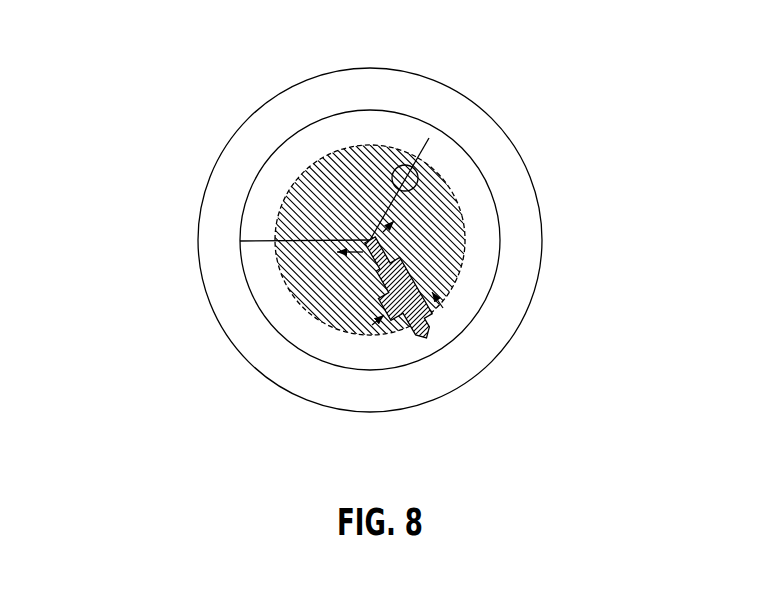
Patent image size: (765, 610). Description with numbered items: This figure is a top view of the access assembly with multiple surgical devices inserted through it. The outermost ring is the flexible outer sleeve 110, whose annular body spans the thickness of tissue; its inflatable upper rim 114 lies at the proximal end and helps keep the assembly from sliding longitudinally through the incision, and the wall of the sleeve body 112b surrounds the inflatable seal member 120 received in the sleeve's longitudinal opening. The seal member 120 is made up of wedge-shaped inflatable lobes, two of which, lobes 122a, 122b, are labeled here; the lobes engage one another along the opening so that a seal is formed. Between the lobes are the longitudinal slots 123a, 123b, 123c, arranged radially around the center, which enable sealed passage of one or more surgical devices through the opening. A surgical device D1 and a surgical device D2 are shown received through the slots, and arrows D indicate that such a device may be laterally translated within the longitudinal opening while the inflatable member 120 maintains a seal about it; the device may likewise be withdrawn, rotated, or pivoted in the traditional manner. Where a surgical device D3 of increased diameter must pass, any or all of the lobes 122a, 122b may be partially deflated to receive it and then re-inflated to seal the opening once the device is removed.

The flexible outer sleeve 110 is at (367, 226).
The inner housing wall 112b is at (265, 182).
The upper rim 114 is at (217, 213).
The inflatable seal member 120 is at (312, 143).
The inflatable lobe 122a is at (478, 240).
The inflatable lobe 122b is at (322, 345).
The longitudinal slot 123a is at (425, 138).
The longitudinal slot 123b is at (249, 288).
The longitudinal slot 123c is at (430, 343).
The arrows indicating lateral translation D is at (387, 295).
The surgical device D1 is at (435, 320).
The surgical device D2 is at (401, 165).
The surgical device having an increased diameter D3 is at (457, 190).